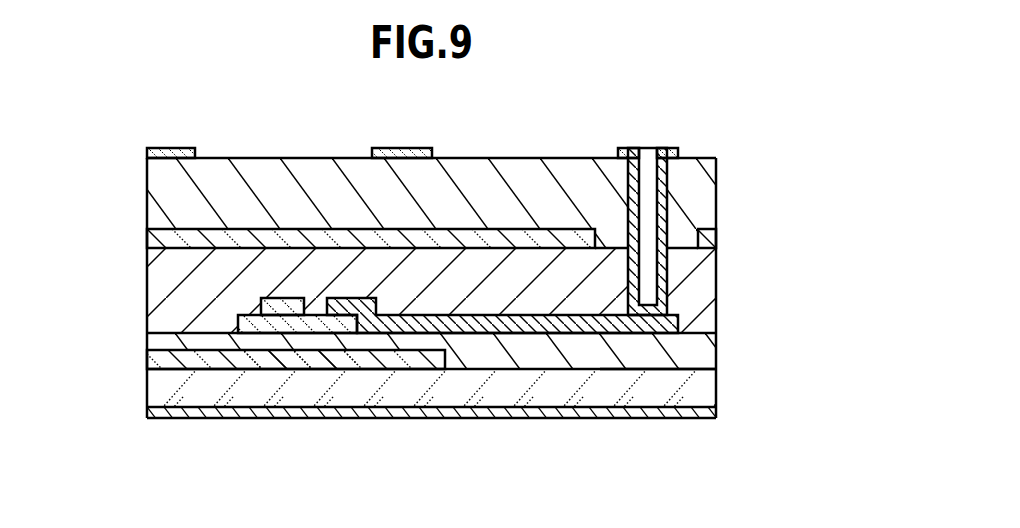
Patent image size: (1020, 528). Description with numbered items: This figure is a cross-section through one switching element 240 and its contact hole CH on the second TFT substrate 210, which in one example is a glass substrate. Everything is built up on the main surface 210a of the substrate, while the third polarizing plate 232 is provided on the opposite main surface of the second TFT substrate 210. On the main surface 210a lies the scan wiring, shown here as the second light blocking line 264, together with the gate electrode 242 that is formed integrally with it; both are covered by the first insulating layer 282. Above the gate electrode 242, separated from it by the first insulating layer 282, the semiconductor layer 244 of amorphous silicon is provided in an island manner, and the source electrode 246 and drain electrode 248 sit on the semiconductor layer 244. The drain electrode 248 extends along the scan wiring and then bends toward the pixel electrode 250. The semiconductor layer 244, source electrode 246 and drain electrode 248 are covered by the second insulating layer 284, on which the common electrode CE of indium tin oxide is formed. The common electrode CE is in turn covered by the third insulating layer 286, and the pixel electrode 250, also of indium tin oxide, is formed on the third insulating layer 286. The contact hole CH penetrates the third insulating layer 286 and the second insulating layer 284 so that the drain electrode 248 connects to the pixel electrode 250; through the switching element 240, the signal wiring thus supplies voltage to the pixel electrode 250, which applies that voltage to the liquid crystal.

The pixel electrode 250 is at (163, 148).
The contact hole CH is at (651, 148).
The third insulating layer 286 is at (147, 182).
The common electrode CE is at (147, 232).
The second insulating layer 284 is at (147, 311).
The first insulating layer 282 is at (717, 350).
The second TFT substrate 210 is at (717, 382).
The main surface 210a is at (646, 361).
The third polarizing plate 232 is at (717, 413).
The second light blocking line 264 is at (157, 368).
The switching element 240 is at (440, 404).
The gate electrode 242 is at (333, 362).
The semiconductor layer 244 is at (246, 333).
The source electrode 246 is at (288, 312).
The drain electrode 248 is at (502, 383).